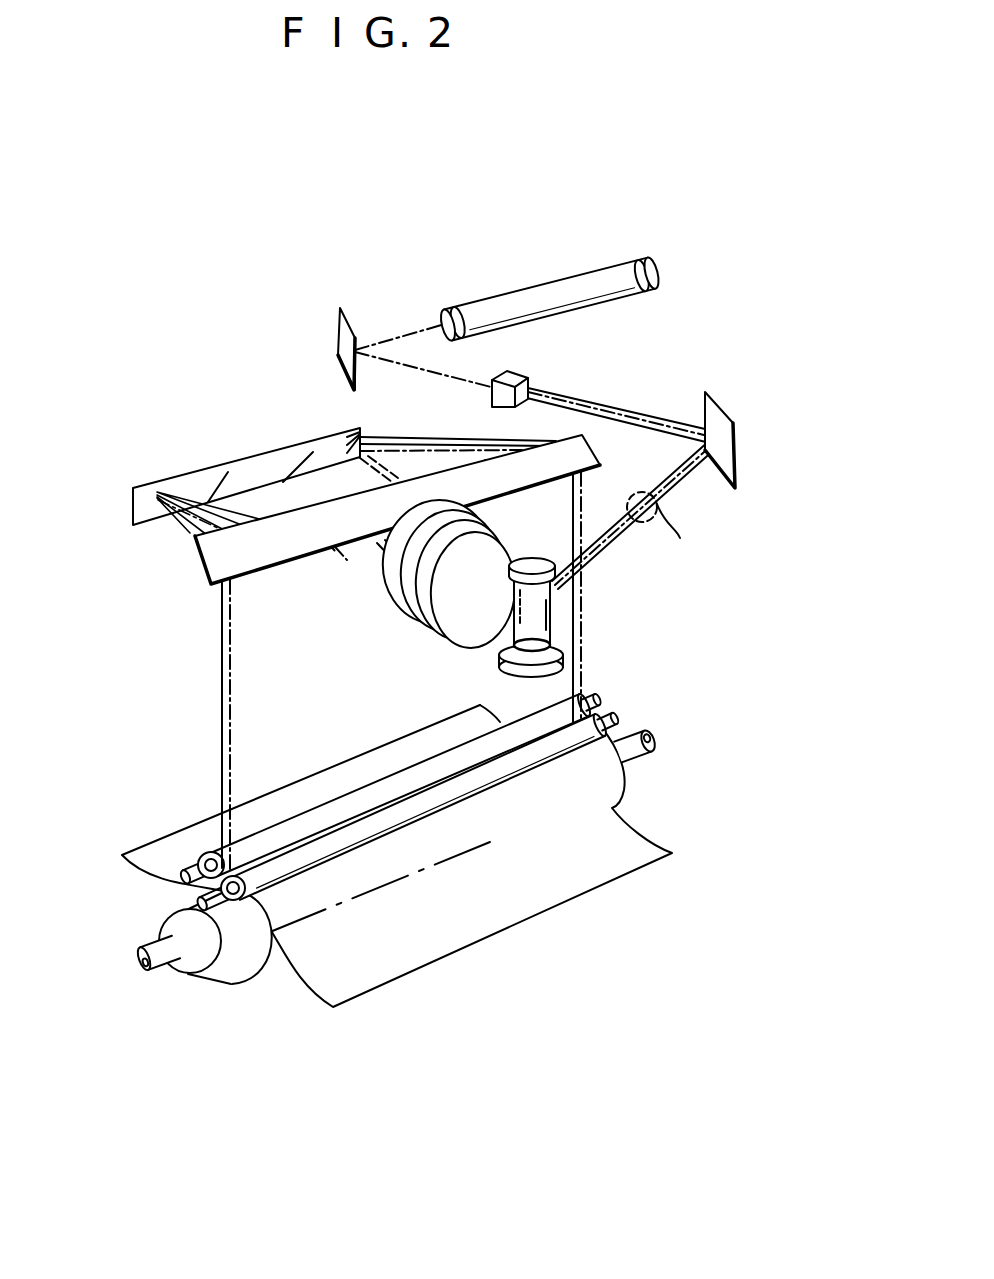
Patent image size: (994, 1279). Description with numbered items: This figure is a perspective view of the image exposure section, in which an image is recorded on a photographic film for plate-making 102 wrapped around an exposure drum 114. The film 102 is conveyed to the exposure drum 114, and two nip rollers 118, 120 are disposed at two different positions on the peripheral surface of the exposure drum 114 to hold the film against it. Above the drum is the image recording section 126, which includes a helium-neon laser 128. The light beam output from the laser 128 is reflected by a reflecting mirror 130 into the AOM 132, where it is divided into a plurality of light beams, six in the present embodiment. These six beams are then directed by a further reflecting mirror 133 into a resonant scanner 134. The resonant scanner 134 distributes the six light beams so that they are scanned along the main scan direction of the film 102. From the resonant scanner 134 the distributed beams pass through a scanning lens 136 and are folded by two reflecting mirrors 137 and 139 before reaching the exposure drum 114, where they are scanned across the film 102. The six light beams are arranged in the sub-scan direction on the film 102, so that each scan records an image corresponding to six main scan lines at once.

The photographic film for plate-making 102 is at (383, 960).
The exposure drum 114 is at (255, 957).
The nip roller 118 is at (312, 847).
The nip roller 120 is at (357, 797).
The image recording section 126 is at (187, 333).
The helium-neon laser 128 is at (558, 280).
The reflecting mirror 130 is at (349, 327).
The AOM 132 is at (520, 372).
The reflecting mirror 133 is at (722, 400).
The resonant scanner 134 is at (527, 623).
The scanning lens 136 is at (400, 585).
The reflecting mirror 137 is at (173, 478).
The reflecting mirror 139 is at (198, 562).